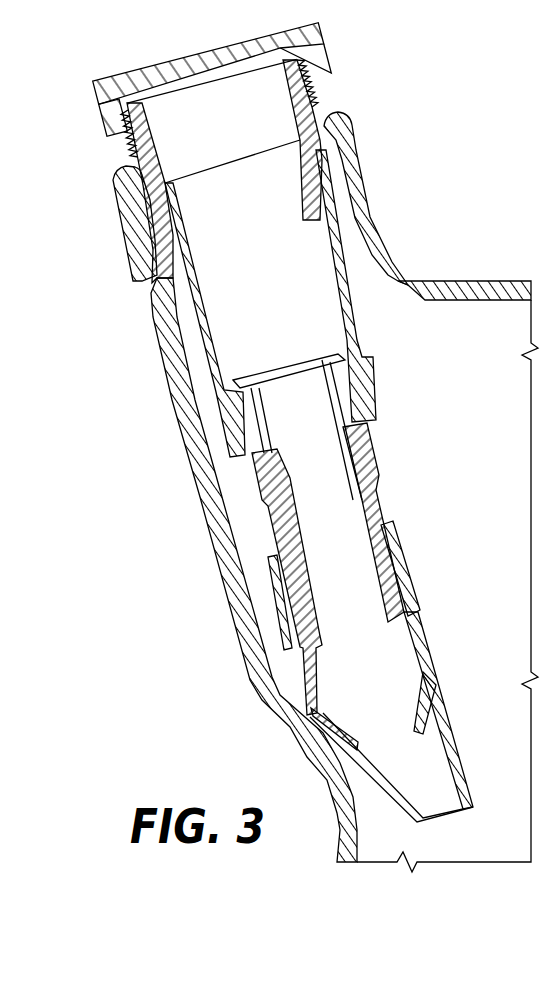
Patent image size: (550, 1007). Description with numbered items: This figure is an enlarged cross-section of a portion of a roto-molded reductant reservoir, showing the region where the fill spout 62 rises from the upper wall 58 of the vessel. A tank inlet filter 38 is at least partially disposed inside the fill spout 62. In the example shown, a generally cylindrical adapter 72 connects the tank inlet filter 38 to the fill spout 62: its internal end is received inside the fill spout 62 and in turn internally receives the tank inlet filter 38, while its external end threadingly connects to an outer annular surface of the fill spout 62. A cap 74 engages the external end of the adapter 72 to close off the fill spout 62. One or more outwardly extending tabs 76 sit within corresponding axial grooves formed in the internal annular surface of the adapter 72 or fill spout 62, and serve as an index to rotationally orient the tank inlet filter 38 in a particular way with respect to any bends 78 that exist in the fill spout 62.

The cap 74 is at (295, 38).
The adapter 72 is at (312, 108).
The fill spout 62 is at (367, 250).
The upper wall 58 is at (507, 288).
The tank inlet filter 38 is at (440, 487).
The outwardly extending tabs 76 is at (349, 375).
The bends 78 is at (302, 728).